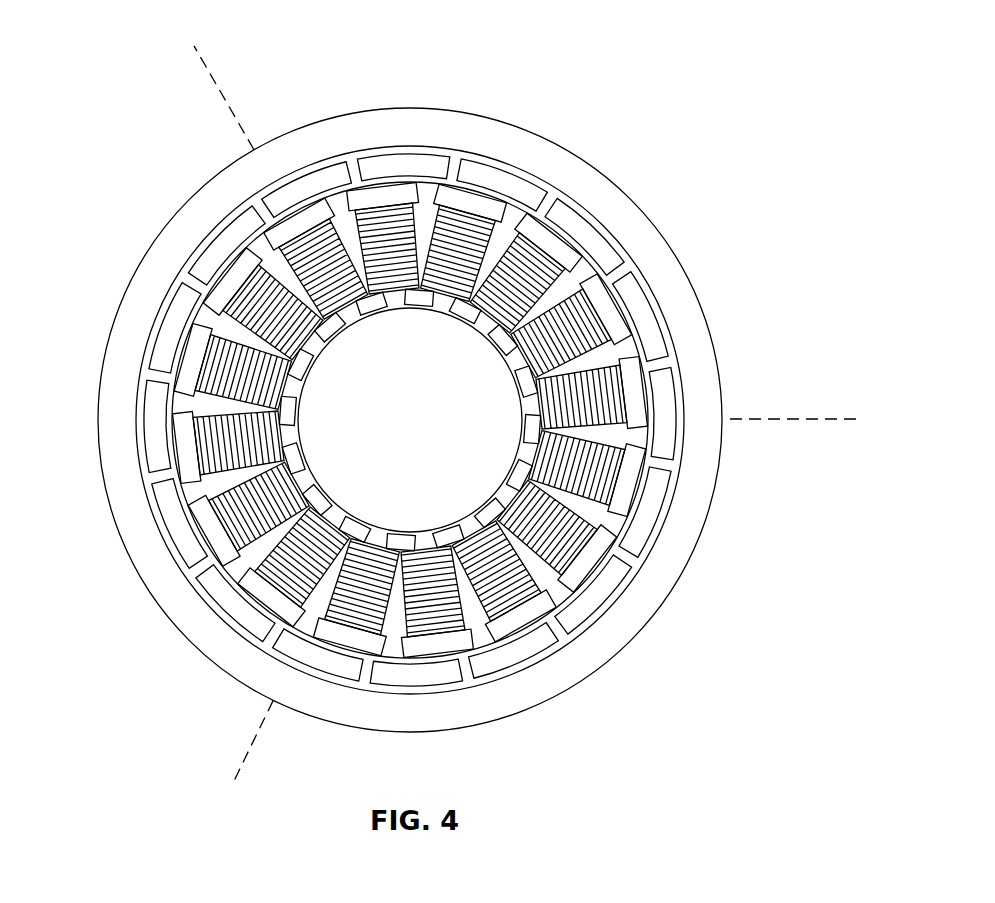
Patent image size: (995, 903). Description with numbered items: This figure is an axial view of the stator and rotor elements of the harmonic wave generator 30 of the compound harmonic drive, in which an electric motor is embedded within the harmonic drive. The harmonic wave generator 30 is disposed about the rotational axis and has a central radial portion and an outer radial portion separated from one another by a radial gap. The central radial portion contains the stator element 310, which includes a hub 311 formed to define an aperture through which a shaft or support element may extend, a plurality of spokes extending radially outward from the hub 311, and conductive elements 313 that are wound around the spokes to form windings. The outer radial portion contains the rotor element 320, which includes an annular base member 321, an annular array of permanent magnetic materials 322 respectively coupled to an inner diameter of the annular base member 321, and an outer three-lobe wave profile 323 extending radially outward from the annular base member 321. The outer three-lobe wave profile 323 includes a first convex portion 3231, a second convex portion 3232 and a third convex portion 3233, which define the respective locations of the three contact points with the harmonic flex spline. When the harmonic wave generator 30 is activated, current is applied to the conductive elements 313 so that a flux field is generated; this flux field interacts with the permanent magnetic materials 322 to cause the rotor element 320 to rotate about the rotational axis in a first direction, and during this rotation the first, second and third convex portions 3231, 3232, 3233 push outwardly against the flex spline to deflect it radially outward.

The harmonic wave generator 30 is at (507, 46).
The stator element 310 is at (470, 537).
The hub 311 is at (443, 297).
The conductive elements 313 is at (227, 301).
The rotor element 320 is at (417, 720).
The annular base member 321 is at (708, 481).
The permanent magnetic materials 322 is at (146, 425).
The outer three-lobe wave profile 323 is at (624, 196).
The first convex portion 3231 is at (730, 406).
The second convex portion 3232 is at (262, 703).
The third convex portion 3233 is at (245, 151).